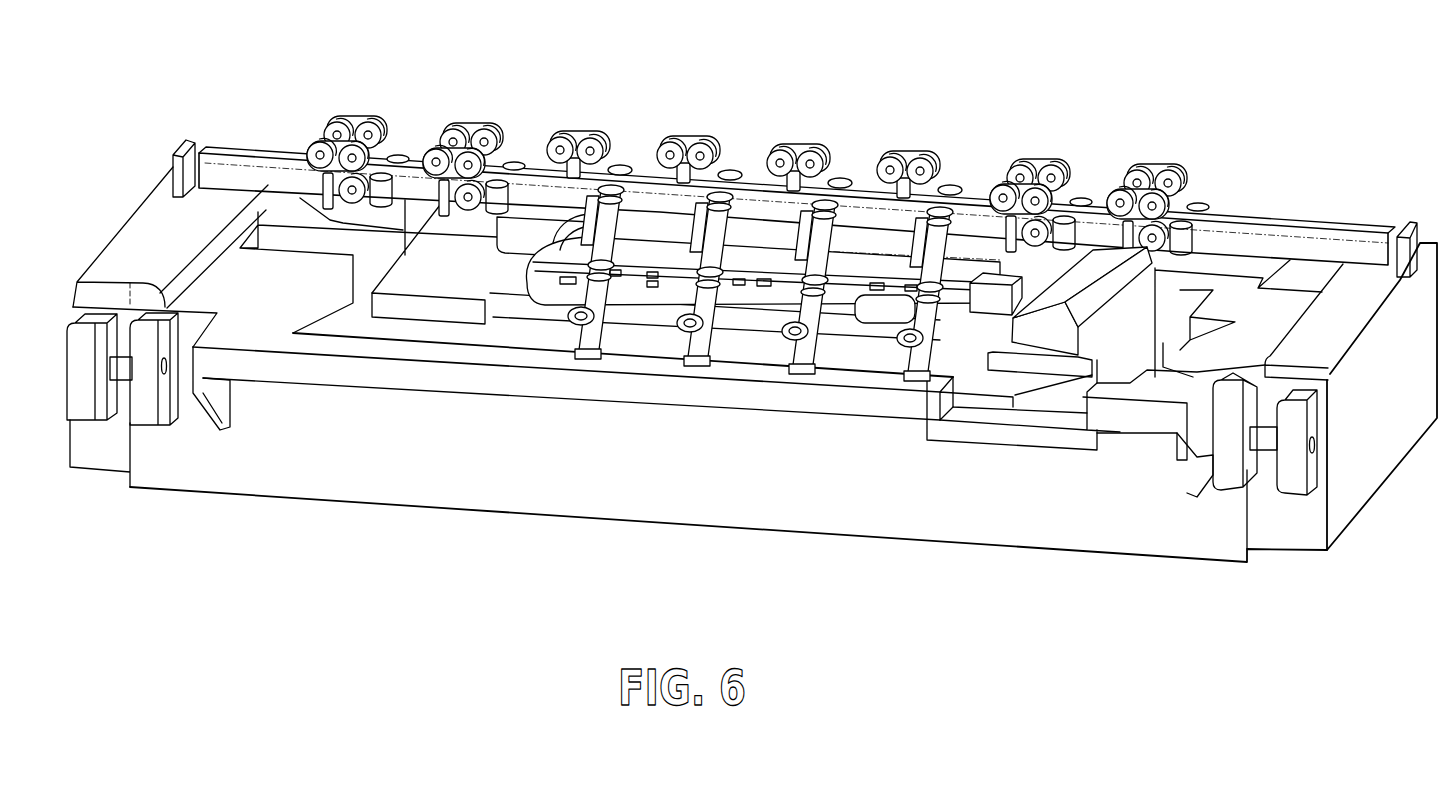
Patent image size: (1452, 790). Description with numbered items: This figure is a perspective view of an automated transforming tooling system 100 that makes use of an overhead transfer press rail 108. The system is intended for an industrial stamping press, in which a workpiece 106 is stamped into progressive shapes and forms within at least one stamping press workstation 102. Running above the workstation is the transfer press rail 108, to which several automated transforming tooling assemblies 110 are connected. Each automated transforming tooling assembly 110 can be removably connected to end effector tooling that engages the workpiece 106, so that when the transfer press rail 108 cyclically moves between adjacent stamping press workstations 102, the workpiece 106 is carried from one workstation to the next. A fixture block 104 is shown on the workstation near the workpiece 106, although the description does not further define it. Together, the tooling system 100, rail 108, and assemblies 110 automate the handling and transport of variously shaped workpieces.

The automated transforming tooling system 100 is at (1104, 137).
The stamping press workstation 102 is at (480, 486).
The fixture block 104 is at (1007, 383).
The workpiece 106 is at (647, 228).
The transfer press rail 108 is at (1323, 223).
The automated transforming tooling assembly 110 is at (747, 227).